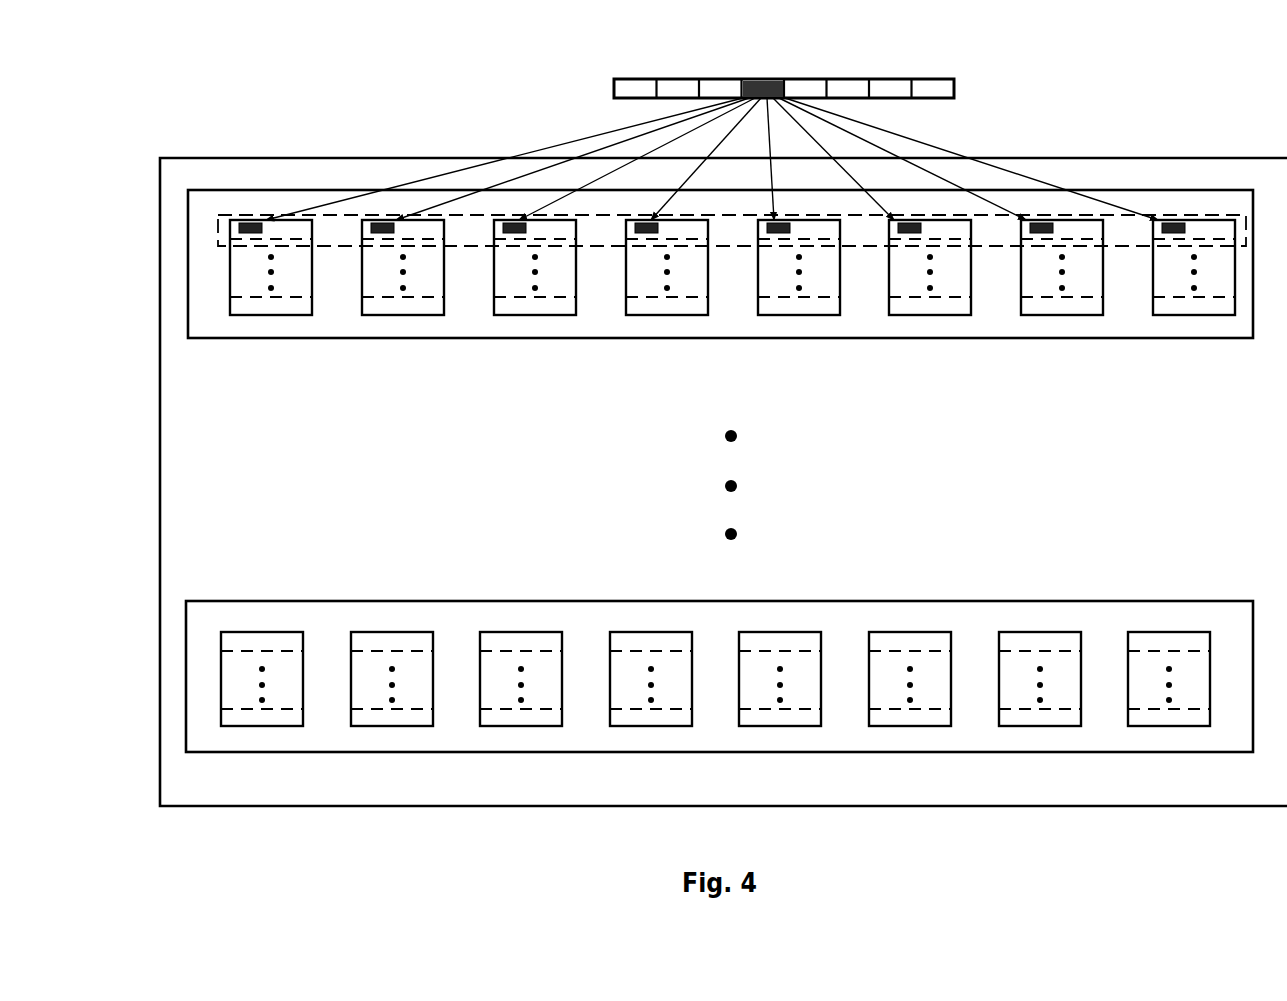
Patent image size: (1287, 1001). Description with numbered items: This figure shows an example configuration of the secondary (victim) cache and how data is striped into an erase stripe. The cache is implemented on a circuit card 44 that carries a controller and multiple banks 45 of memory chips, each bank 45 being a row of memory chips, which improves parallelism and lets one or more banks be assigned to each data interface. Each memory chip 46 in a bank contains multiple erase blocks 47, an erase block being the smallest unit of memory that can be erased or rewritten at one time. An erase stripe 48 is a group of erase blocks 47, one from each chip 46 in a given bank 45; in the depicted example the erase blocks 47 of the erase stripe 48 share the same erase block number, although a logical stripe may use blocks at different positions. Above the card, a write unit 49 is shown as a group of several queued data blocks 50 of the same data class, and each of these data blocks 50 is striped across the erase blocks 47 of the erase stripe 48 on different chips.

The circuit card 44 is at (1147, 159).
The bank 45 is at (1112, 339).
The memory chip 46 is at (229, 280).
The erase block 47 is at (298, 230).
The erase stripe 48 is at (462, 247).
The write unit 49 is at (962, 70).
The data block 50 is at (764, 78).